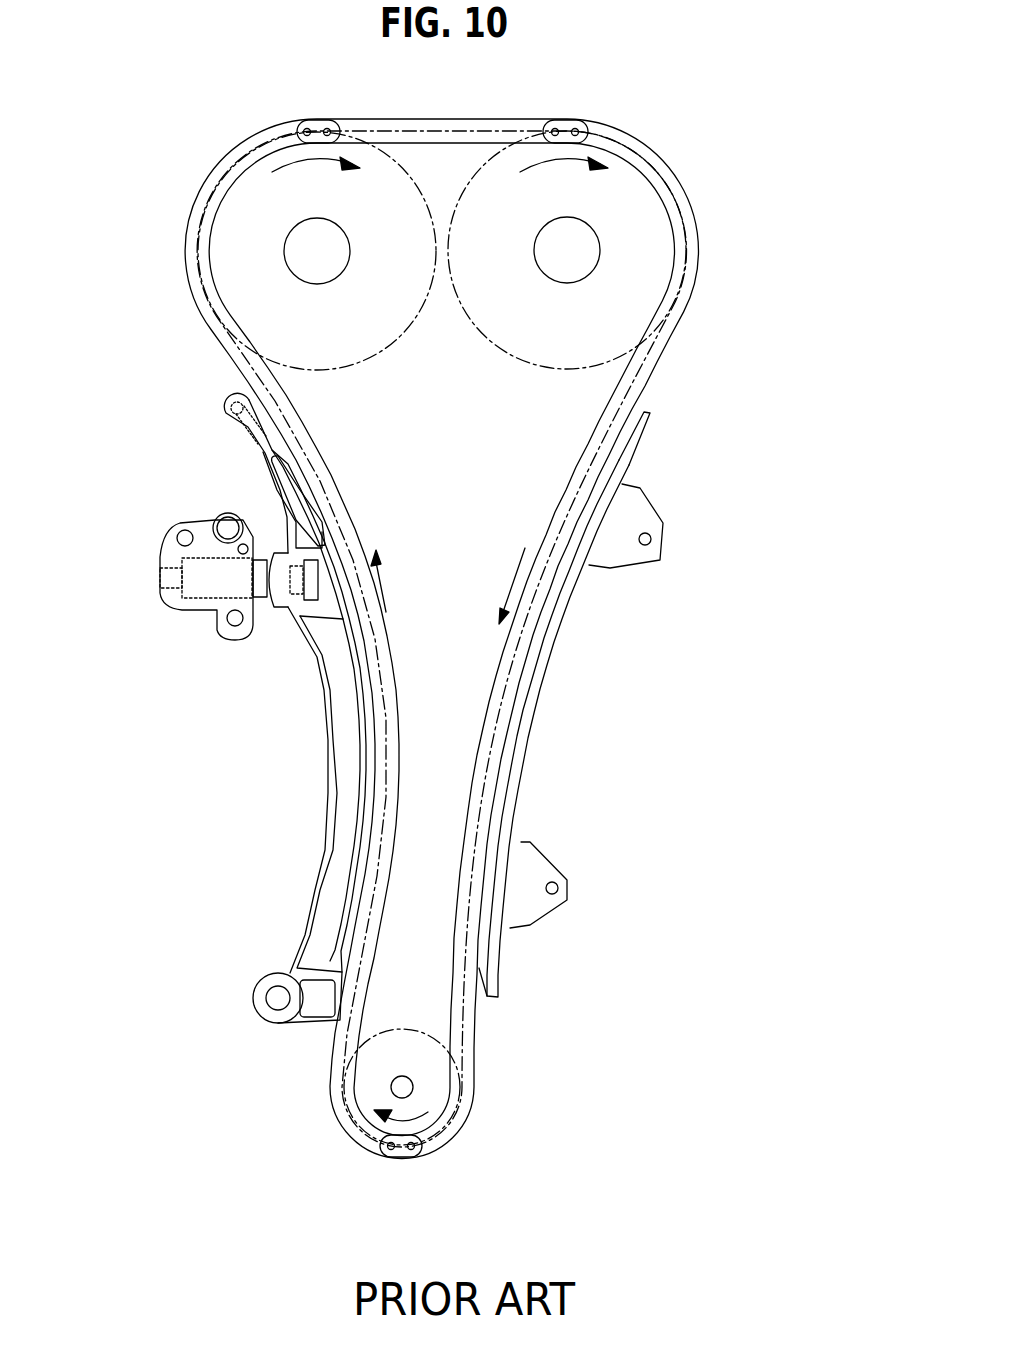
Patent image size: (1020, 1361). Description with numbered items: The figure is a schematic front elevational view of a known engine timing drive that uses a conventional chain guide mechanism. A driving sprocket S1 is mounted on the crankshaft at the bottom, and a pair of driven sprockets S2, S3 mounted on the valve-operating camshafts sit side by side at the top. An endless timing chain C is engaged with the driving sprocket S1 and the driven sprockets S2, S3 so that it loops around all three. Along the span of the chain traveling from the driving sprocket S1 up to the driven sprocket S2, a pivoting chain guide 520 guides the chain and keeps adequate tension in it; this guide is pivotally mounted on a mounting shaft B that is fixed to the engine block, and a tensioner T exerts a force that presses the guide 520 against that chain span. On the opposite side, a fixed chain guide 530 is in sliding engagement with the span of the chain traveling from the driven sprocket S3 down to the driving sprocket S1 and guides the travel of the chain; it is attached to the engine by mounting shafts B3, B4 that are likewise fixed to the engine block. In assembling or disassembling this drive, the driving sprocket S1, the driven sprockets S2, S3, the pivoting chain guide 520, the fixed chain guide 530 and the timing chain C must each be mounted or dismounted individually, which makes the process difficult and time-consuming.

The driving sprocket S1 is at (433, 1094).
The driven sprocket S2 is at (243, 213).
The driven sprocket S3 is at (640, 213).
The timing chain C is at (646, 368).
The tensioner T is at (175, 559).
The pivoting chain guide 520 is at (345, 795).
The fixed chain guide 530 is at (515, 795).
The mounting shaft B is at (272, 998).
The mounting bolt of fixed guide B3 is at (652, 539).
The mounting bolt of fixed guide B4 is at (559, 888).